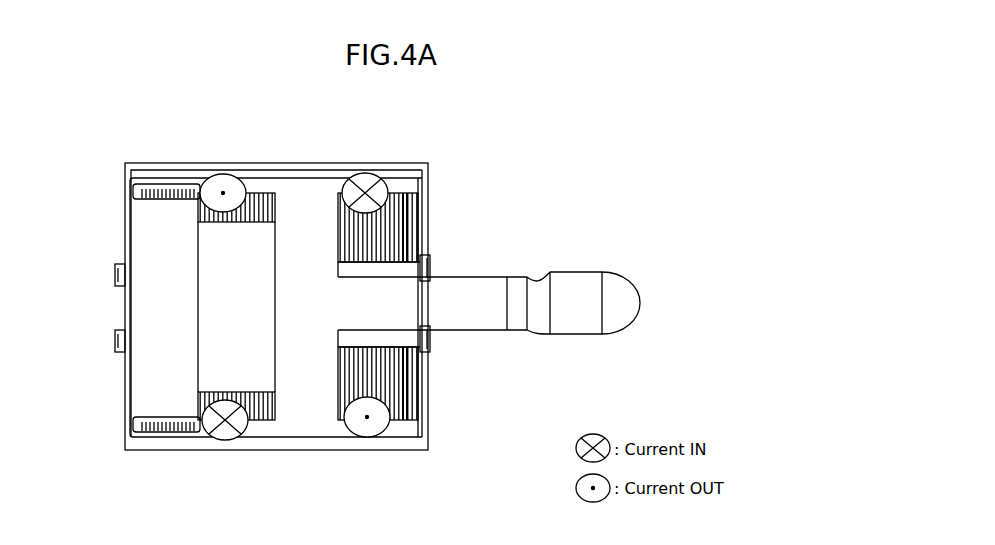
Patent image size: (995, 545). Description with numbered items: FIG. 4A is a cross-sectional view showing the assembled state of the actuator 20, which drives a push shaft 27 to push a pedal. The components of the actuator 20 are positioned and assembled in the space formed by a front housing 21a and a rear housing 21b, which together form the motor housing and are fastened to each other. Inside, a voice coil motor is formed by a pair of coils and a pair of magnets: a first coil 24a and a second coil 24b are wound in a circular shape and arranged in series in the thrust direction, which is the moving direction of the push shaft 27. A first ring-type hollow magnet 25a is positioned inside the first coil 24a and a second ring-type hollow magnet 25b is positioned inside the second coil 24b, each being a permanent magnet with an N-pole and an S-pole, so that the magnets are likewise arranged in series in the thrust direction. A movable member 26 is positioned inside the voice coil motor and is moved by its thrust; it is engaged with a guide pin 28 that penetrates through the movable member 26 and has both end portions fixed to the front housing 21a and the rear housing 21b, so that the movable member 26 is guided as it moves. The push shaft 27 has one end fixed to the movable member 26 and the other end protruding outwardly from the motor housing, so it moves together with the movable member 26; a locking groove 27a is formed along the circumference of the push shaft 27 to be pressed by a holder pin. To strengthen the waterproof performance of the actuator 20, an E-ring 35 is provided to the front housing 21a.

The actuator 20 is at (108, 318).
The front housing 21a is at (426, 430).
The rear housing 21b is at (128, 439).
The first coil 24a is at (385, 372).
The second coil 24b is at (200, 398).
The first ring-type hollow magnet 25a is at (297, 220).
The second ring-type hollow magnet 25b is at (176, 218).
The movable member 26 is at (230, 268).
The push shaft 27 is at (613, 289).
The locking groove 27a is at (538, 280).
The guide pin 28 is at (376, 268).
The E-ring 35 is at (431, 260).